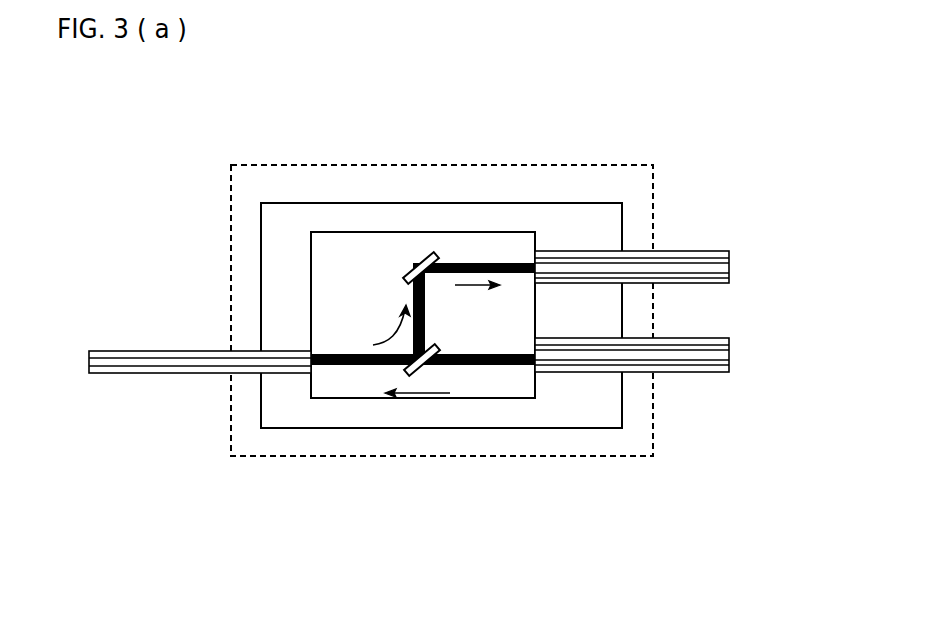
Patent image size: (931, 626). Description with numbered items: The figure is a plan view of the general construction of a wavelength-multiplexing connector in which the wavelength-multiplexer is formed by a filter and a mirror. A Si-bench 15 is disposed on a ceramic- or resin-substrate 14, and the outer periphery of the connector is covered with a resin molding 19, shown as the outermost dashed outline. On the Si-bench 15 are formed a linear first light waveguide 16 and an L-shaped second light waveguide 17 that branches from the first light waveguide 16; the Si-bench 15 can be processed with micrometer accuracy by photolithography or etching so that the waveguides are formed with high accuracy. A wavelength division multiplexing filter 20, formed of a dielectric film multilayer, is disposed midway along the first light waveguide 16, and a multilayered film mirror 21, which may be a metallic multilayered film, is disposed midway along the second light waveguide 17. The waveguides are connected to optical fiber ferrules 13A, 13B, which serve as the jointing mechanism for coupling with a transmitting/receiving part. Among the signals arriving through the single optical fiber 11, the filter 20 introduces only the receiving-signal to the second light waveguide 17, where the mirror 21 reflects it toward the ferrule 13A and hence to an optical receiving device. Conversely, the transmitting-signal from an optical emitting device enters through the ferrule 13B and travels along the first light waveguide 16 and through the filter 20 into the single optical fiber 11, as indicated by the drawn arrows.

The single optical fiber 11 is at (156, 351).
The optical fiber ferrule 13A is at (710, 252).
The optical fiber ferrule 13B is at (702, 370).
The substrate 14 is at (597, 428).
The Si-bench 15 is at (352, 250).
The first light waveguide 16 is at (488, 365).
The second light waveguide 17 is at (490, 262).
The resin molding 19 is at (608, 160).
The wavelength division multiplexing filter 20 is at (418, 376).
The multilayered film mirror 21 is at (423, 254).